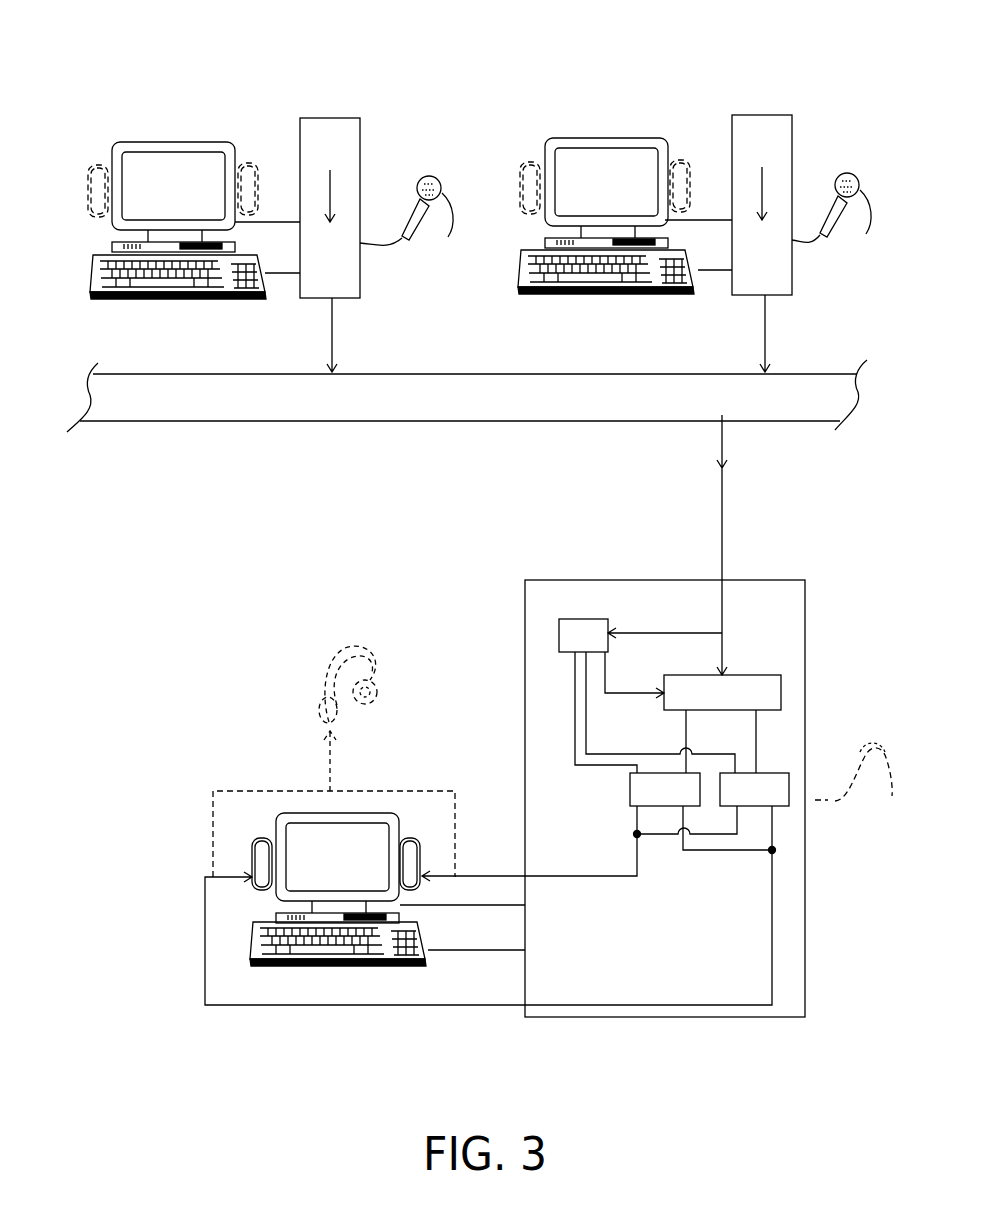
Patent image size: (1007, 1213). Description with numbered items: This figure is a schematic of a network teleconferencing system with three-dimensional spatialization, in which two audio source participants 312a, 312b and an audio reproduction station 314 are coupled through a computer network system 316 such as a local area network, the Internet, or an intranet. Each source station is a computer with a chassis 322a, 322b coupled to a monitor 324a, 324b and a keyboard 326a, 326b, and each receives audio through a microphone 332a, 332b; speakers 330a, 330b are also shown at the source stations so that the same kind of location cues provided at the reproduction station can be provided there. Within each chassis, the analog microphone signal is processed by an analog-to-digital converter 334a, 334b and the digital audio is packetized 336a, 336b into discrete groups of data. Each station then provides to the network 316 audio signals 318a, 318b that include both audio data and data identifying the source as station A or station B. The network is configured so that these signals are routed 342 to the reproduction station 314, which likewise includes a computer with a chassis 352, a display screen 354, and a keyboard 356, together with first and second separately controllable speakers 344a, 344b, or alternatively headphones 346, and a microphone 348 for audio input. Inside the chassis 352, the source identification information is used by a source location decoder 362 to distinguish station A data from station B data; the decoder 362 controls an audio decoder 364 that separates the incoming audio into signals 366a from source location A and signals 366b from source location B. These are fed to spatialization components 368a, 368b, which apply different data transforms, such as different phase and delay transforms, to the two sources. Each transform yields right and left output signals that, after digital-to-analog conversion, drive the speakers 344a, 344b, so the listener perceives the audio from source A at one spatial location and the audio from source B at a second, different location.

The audio source participant 312a is at (331, 92).
The audio source participant 312b is at (767, 100).
The audio reproduction station 314 is at (852, 606).
The computer network system 316 is at (560, 373).
The audio signal 318a is at (334, 333).
The audio signal 318b is at (767, 333).
The chassis 322a is at (360, 190).
The chassis 322b is at (792, 190).
The monitor 324a is at (152, 142).
The monitor 324b is at (638, 138).
The keyboard 326a is at (92, 282).
The keyboard 326b is at (620, 297).
The speakers 330a is at (88, 185).
The speakers 330b is at (538, 165).
The microphone 332a is at (418, 224).
The microphone 332b is at (846, 220).
The analog-to-digital converter 334a is at (340, 138).
The analog-to-digital converter 334b is at (782, 135).
The packetizer 336a is at (322, 252).
The packetizer 336b is at (738, 240).
The routing 342 is at (722, 503).
The first speaker 344a is at (261, 838).
The second speaker 344b is at (415, 838).
The headphones 346 is at (378, 660).
The microphone 348 is at (864, 778).
The chassis 352 is at (806, 930).
The receiver monitor 354 is at (356, 866).
The keyboard 356 is at (318, 968).
The source location decoder 362 is at (578, 619).
The audio decoder 364 is at (765, 675).
The output signal 366a is at (686, 736).
The output signal 366b is at (756, 751).
The spatialization component 368a is at (599, 827).
The spatialization component 368b is at (497, 889).